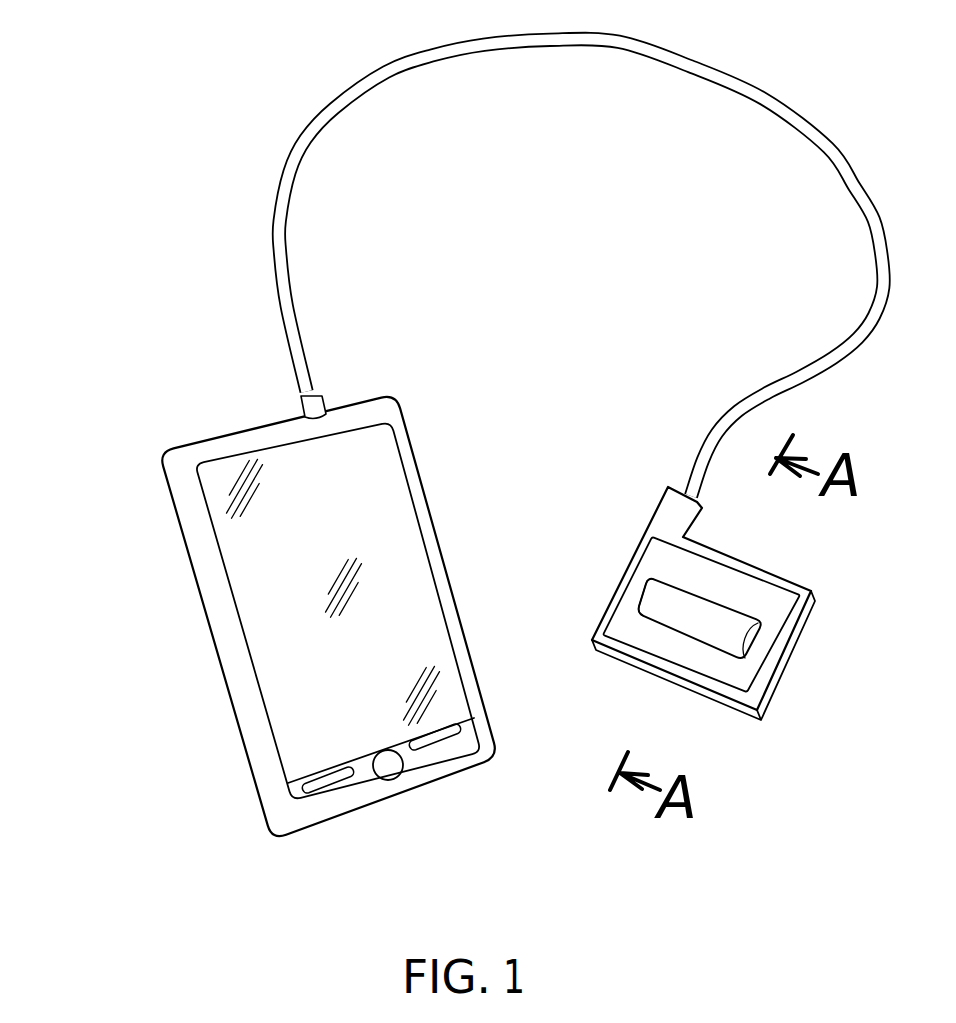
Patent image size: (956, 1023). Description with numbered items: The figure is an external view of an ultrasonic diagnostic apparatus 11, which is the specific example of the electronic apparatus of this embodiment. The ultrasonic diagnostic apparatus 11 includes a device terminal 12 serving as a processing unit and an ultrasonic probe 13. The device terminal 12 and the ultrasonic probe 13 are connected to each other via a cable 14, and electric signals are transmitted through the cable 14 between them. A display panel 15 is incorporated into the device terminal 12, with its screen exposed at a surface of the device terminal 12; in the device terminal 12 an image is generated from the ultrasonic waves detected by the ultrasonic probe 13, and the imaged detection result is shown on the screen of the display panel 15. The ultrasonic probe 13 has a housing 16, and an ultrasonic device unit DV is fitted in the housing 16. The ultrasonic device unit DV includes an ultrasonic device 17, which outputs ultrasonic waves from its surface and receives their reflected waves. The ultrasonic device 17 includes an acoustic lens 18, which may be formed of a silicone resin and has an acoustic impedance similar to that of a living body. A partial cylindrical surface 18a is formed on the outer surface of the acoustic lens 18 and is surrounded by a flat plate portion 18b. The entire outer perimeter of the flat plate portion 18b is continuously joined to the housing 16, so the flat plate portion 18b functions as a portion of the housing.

The ultrasonic diagnostic apparatus 11 is at (106, 423).
The device terminal 12 is at (203, 433).
The ultrasonic probe 13 is at (592, 685).
The cable 14 is at (573, 42).
The display panel 15 is at (385, 480).
The housing 16 is at (766, 698).
The ultrasonic device 17 is at (738, 592).
The acoustic lens 18 is at (548, 522).
The partial cylindrical surface 18a is at (650, 597).
The flat plate portion 18b is at (635, 633).
The ultrasonic device unit DV is at (714, 572).